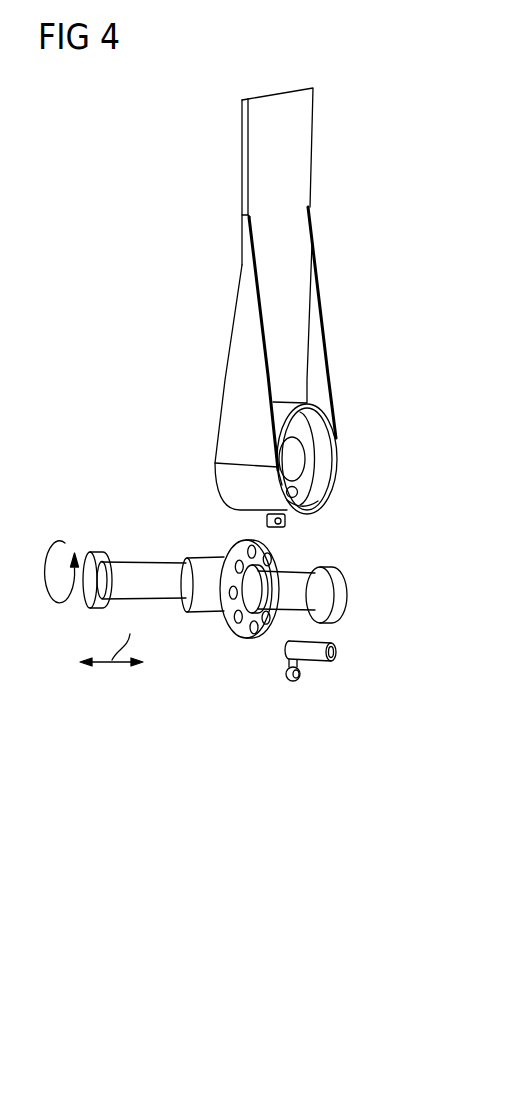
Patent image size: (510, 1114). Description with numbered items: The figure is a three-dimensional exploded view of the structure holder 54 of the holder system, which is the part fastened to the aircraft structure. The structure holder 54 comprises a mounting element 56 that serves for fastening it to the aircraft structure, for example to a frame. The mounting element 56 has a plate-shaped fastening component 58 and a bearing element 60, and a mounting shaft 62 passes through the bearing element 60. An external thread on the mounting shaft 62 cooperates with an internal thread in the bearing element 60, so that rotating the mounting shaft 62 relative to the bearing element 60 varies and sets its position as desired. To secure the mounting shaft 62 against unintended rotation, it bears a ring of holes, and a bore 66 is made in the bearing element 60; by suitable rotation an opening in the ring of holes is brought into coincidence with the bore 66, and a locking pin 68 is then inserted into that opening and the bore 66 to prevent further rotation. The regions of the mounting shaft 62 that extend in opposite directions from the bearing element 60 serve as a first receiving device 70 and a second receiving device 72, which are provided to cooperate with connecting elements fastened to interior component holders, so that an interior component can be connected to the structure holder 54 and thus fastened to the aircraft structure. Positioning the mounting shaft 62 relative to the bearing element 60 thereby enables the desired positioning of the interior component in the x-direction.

The structure holder 54 is at (336, 184).
The mounting element 56 is at (315, 365).
The plate-shaped fastening component 58 is at (303, 123).
The bearing element 60 is at (228, 485).
The mounting shaft 62 is at (135, 573).
The bore 66 is at (297, 497).
The locking pin 68 is at (310, 662).
The first receiving device 70 is at (288, 570).
The second receiving device 72 is at (147, 605).